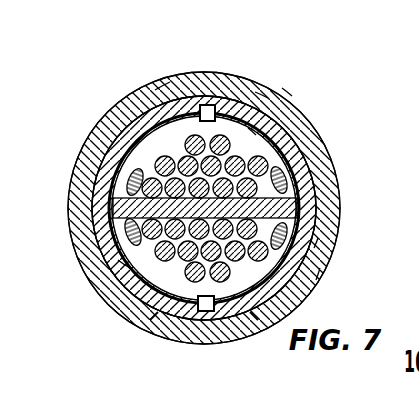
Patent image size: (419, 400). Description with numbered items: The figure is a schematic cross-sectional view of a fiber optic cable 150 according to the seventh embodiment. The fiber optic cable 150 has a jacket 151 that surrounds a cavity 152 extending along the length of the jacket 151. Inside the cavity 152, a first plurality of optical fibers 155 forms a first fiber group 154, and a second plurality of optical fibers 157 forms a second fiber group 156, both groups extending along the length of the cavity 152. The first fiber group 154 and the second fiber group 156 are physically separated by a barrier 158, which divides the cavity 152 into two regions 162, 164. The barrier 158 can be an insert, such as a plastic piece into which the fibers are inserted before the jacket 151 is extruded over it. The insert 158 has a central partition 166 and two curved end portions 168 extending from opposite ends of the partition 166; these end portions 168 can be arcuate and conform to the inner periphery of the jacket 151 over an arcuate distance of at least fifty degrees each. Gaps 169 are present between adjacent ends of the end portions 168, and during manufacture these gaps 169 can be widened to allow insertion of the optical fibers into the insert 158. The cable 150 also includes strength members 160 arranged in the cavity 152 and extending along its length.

The fiber optic cable 150 is at (287, 94).
The jacket 151 is at (103, 147).
The cavity 152 is at (118, 258).
The first fiber group 154 is at (250, 133).
The optical fibers 155 is at (260, 93).
The second fiber group 156 is at (325, 272).
The optical fibers 157 is at (322, 242).
The barrier 158 is at (333, 162).
The strength members 160 is at (305, 145).
The region 162 is at (165, 270).
The region 164 is at (118, 112).
The central partition 166 is at (160, 93).
The curved end portions 168 is at (178, 338).
The gaps 169 is at (205, 105).